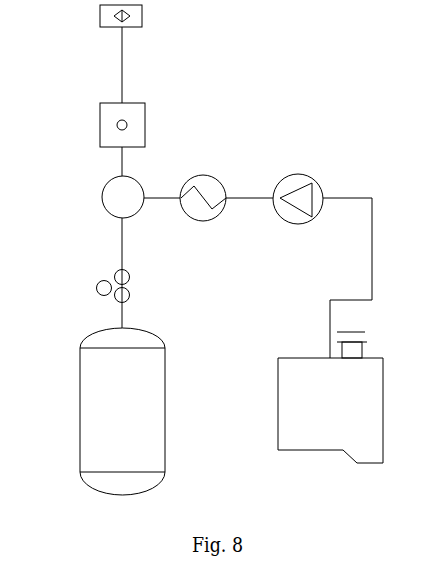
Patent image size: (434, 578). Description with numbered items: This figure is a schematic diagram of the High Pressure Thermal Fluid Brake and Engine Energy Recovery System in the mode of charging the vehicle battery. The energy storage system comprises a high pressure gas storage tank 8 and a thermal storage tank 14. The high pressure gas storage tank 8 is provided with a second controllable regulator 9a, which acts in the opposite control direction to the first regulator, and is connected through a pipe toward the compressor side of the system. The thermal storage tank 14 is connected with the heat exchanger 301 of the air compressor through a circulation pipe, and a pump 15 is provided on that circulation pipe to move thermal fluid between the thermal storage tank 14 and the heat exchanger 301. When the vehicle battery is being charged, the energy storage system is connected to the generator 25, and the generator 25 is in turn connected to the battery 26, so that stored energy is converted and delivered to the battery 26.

The battery 26 is at (137, 20).
The generator 25 is at (118, 197).
The heat exchanger 301 is at (207, 180).
The pump 15 is at (305, 200).
The second controllable regulator 9a is at (123, 288).
The high pressure gas storage tank 8 is at (107, 418).
The thermal storage tank 14 is at (308, 410).